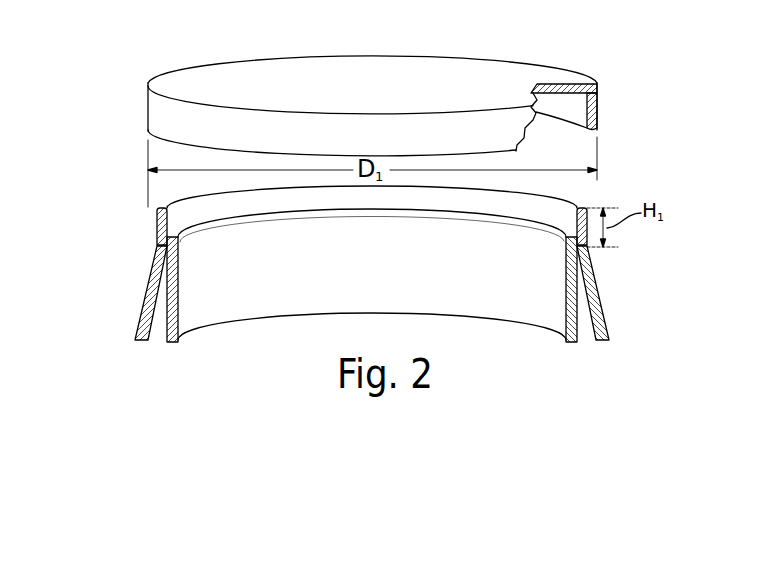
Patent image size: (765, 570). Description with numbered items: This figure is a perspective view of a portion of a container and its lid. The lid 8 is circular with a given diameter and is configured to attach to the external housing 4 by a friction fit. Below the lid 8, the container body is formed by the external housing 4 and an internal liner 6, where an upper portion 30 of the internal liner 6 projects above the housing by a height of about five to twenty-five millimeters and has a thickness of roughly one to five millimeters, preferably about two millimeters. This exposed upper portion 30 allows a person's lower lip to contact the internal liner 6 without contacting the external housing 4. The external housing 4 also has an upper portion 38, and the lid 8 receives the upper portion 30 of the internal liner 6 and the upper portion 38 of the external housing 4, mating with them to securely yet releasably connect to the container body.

The lid 8 is at (517, 67).
The external housing 4 is at (363, 247).
The internal liner 6 is at (583, 208).
The upper portion of the internal liner 30 is at (157, 223).
The upper portion of the external housing 38 is at (148, 284).